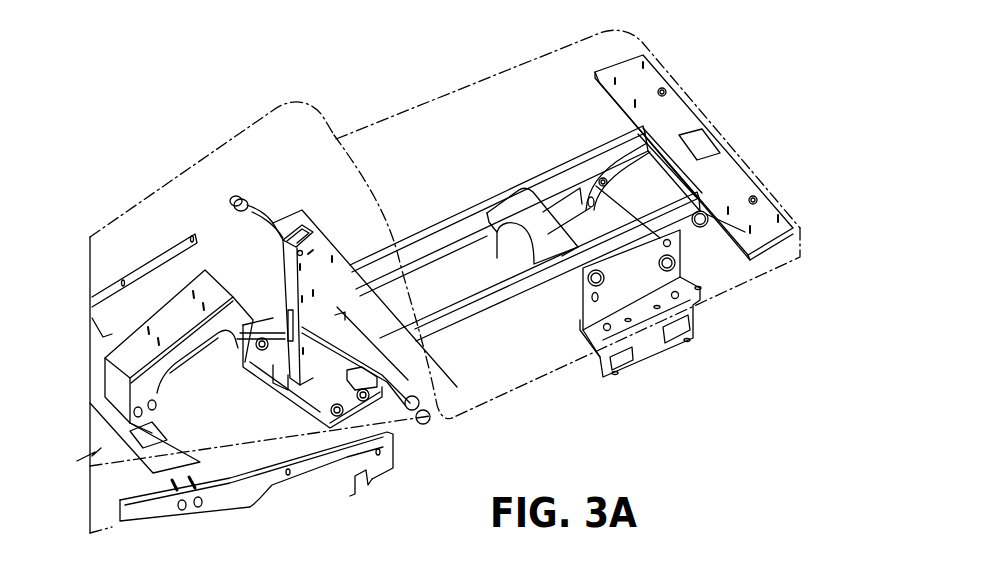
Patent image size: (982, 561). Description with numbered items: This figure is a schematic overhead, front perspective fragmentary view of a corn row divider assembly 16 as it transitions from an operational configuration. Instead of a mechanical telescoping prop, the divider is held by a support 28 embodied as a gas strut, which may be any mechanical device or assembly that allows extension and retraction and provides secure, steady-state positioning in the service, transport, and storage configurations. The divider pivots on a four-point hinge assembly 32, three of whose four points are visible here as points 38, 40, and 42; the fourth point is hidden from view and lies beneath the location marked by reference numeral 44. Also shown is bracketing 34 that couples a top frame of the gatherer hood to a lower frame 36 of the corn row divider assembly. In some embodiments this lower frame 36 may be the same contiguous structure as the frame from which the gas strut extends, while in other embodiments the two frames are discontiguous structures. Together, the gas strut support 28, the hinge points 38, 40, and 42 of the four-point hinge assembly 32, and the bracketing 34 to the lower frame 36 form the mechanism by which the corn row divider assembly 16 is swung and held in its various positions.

The corn row divider assembly 16 is at (217, 109).
The support 28 is at (488, 268).
The four-point hinge assembly 32 is at (577, 127).
The bracketing 34 is at (578, 302).
The lower frame 36 is at (742, 270).
The point 38 is at (597, 288).
The point 40 is at (667, 271).
The point 42 is at (703, 227).
The location 44 is at (744, 192).